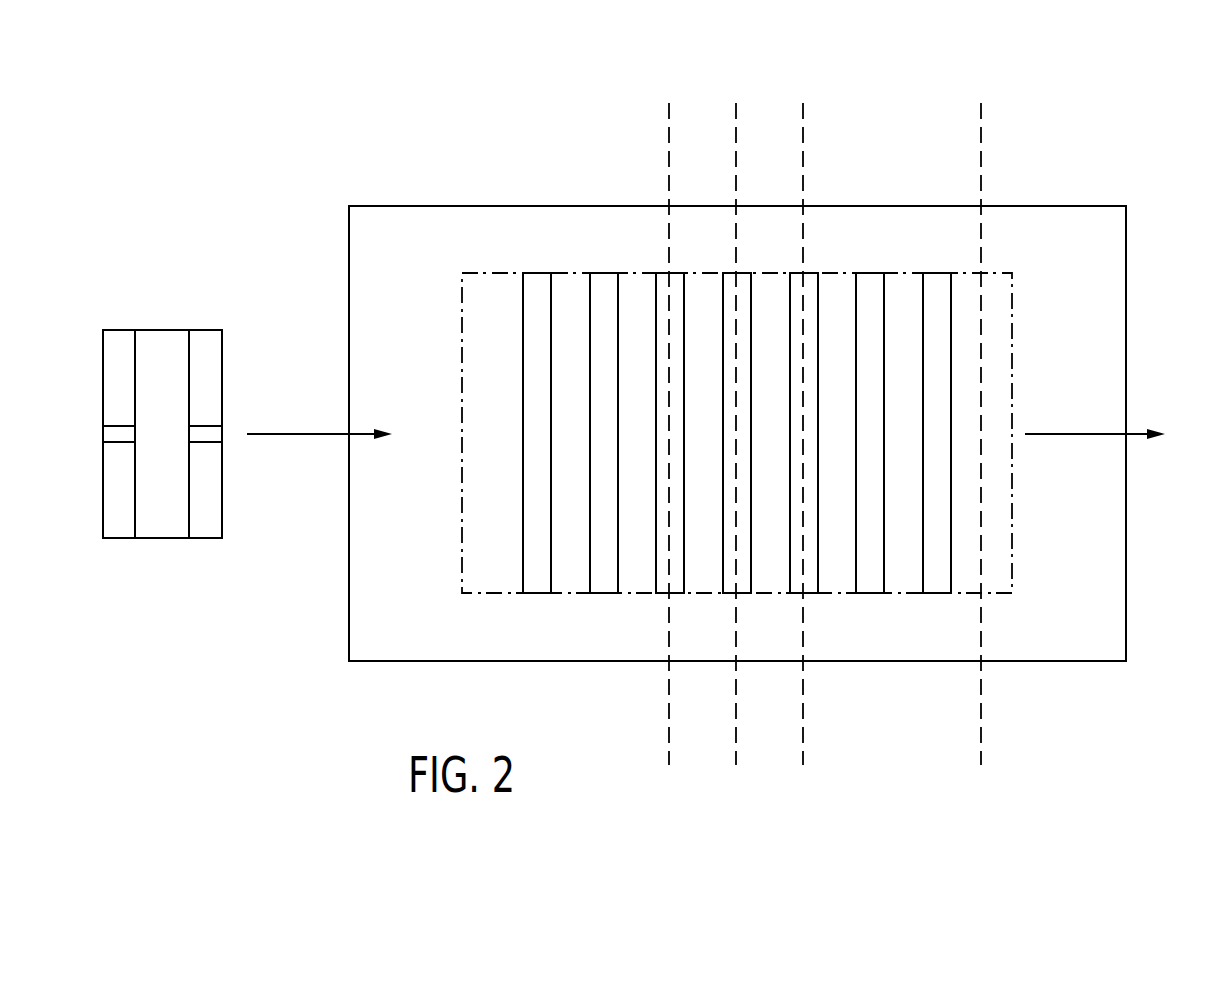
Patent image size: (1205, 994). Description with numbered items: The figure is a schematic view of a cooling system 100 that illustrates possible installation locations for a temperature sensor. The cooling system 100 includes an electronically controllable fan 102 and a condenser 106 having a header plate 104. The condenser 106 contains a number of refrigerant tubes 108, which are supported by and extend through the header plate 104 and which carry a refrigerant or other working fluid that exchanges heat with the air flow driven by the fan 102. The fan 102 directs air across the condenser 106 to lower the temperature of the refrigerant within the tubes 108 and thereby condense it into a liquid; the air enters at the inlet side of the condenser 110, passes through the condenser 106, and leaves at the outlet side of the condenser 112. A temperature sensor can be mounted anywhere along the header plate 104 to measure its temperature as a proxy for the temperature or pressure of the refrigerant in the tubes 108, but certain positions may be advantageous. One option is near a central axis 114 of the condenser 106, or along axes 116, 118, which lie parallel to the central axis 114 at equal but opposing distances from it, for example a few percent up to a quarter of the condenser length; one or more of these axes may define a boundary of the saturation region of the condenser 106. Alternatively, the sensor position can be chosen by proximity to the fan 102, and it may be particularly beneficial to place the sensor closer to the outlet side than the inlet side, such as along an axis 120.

The cooling system 100 is at (178, 120).
The electronically controllable fan 102 is at (148, 330).
The header plate 104 is at (1060, 206).
The condenser 106 is at (995, 272).
The refrigerant tubes 108 is at (537, 373).
The inlet side of the condenser 110 is at (310, 433).
The outlet side of the condenser 112 is at (1088, 433).
The central axis 114 is at (735, 130).
The axis 116 is at (668, 130).
The axis 118 is at (802, 130).
The axis 120 is at (980, 130).